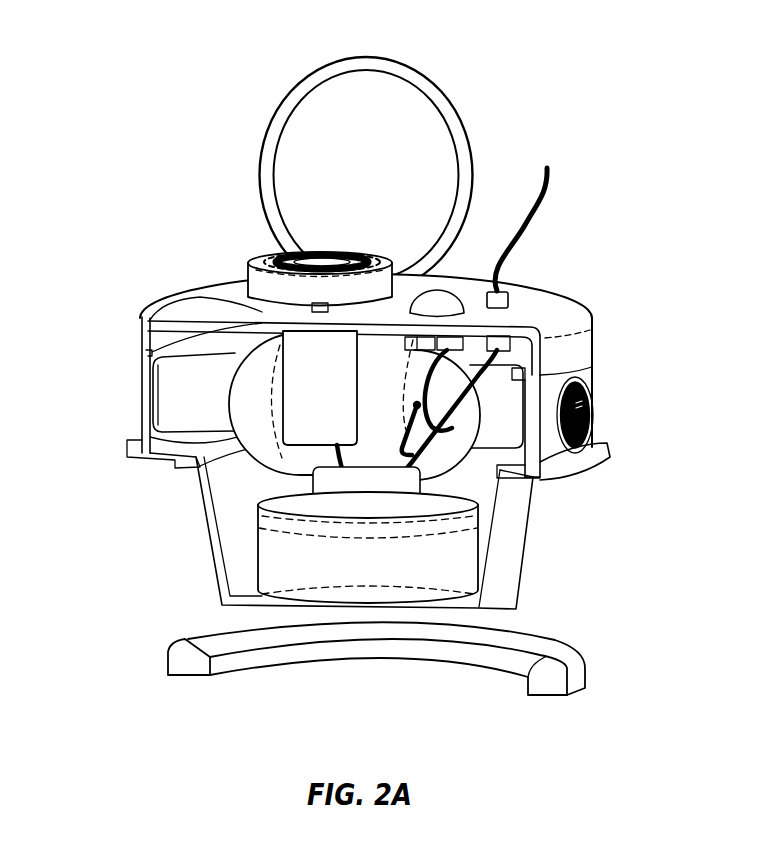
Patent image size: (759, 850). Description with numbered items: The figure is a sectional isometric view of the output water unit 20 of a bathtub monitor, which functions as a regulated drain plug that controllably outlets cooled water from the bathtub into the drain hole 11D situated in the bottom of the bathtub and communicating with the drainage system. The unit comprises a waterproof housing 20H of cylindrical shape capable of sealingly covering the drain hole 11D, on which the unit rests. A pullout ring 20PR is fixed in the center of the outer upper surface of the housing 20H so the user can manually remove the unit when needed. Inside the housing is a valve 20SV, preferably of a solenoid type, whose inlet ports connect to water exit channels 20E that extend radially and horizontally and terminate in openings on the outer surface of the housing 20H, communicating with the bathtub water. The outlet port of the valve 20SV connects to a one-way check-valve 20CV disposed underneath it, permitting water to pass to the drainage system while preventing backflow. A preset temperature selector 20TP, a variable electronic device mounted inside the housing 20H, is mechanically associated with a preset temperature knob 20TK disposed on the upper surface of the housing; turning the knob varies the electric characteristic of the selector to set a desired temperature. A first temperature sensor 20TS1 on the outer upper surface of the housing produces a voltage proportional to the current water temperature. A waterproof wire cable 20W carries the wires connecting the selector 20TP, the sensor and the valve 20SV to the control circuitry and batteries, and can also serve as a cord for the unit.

The output water unit 20 is at (283, 56).
The pullout ring 20PR is at (268, 140).
The preset temperature knob 20TK is at (248, 283).
The first temperature sensor 20TS1 is at (445, 293).
The wire cable 20W is at (543, 197).
The waterproof housing 20H is at (572, 307).
The preset temperature selector 20TP is at (283, 405).
The water exit channels 20E is at (590, 403).
The valve 20SV is at (248, 452).
The one-way check-valve 20CV is at (258, 555).
The drain hole 11D is at (168, 668).